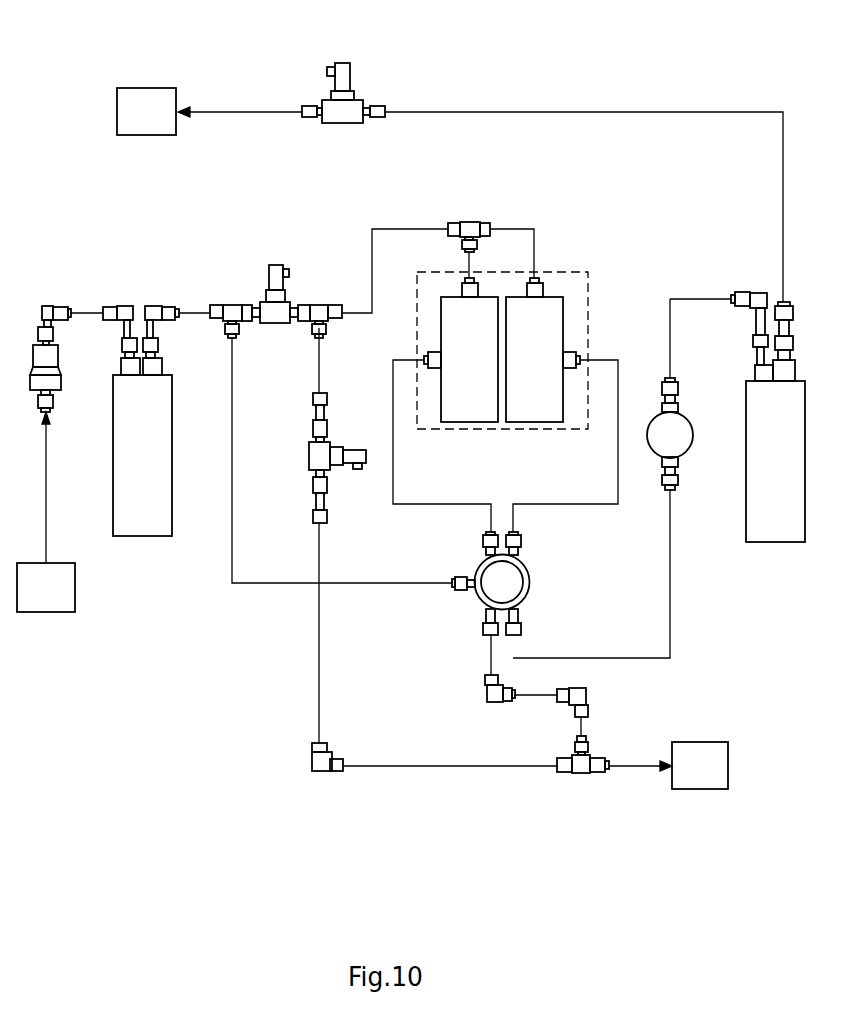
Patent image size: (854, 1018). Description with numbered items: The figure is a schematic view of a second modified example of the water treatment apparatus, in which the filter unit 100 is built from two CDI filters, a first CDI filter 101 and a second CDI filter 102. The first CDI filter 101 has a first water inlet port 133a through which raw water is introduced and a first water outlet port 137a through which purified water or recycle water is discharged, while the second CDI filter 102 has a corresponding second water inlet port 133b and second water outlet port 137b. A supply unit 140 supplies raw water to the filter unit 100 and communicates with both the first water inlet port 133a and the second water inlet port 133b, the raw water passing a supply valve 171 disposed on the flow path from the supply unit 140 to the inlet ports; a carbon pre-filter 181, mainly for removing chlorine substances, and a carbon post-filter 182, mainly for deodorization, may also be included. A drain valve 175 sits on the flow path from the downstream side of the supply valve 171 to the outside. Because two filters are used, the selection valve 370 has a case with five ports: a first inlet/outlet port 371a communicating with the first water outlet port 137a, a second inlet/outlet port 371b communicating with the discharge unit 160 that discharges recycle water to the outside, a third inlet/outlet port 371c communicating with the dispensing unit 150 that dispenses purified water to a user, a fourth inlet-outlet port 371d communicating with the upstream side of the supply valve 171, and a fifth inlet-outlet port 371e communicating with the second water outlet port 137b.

The filter unit 100 is at (588, 272).
The first CDI filter 101 is at (469, 424).
The second CDI filter 102 is at (534, 424).
The first water inlet port 133a is at (466, 280).
The second water inlet port 133b is at (535, 278).
The first water outlet port 137a is at (424, 358).
The second water outlet port 137b is at (585, 358).
The supply unit 140 is at (45, 615).
The dispensing unit 150 is at (143, 88).
The discharge unit 160 is at (700, 790).
The supply valve 171 is at (276, 265).
The drain valve 175 is at (308, 466).
The carbon pre-filter 181 is at (140, 538).
The carbon post-filter 182 is at (773, 545).
The selection valve 370 is at (512, 580).
The first inlet/outlet port 371a is at (483, 540).
The second inlet/outlet port 371b is at (484, 632).
The third inlet/outlet port 371c is at (522, 628).
The fourth inlet-outlet port 371d is at (452, 590).
The fifth inlet-outlet port 371e is at (521, 540).